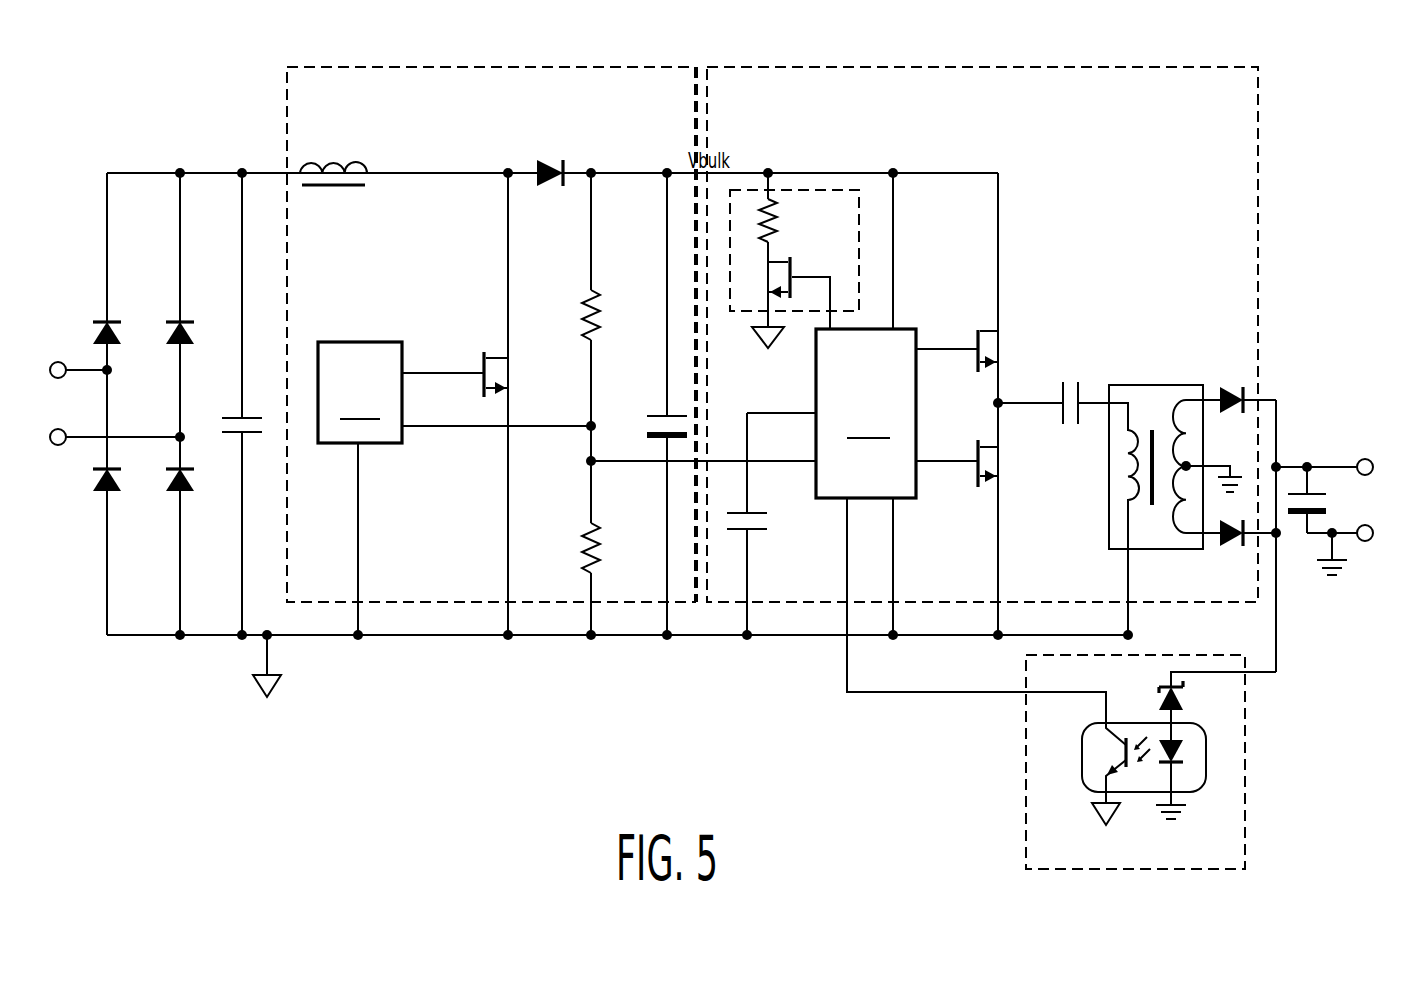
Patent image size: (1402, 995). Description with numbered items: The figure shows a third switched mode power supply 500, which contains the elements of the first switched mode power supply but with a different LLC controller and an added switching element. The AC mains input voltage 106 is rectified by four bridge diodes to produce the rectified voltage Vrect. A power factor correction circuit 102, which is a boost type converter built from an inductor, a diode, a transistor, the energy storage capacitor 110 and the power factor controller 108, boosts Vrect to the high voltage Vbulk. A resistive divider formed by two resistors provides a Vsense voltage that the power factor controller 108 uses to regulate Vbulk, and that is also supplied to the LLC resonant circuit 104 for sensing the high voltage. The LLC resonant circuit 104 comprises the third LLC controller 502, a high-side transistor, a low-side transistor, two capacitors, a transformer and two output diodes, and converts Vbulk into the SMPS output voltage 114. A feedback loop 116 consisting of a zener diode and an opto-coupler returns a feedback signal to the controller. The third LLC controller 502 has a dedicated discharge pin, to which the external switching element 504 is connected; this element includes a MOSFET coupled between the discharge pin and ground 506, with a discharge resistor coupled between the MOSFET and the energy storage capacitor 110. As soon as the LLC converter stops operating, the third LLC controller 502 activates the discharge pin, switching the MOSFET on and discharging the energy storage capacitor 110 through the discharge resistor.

The third switched mode power supply 500 is at (90, 110).
The power factor correction (PFC) circuit 102 is at (546, 66).
The LLC resonant circuit 104 is at (1073, 67).
The AC mains input voltage 106 is at (58, 361).
The power factor controller (IC1) 108 is at (454, 490).
The energy storage capacitor (C2) 110 is at (648, 432).
The SMPS output voltage (Vout) 114 is at (1364, 457).
The feedback loop 116 is at (1110, 762).
The third LLC controller (IC2) 502 is at (930, 445).
The external switching element 504 is at (818, 189).
The ground 506 is at (258, 688).